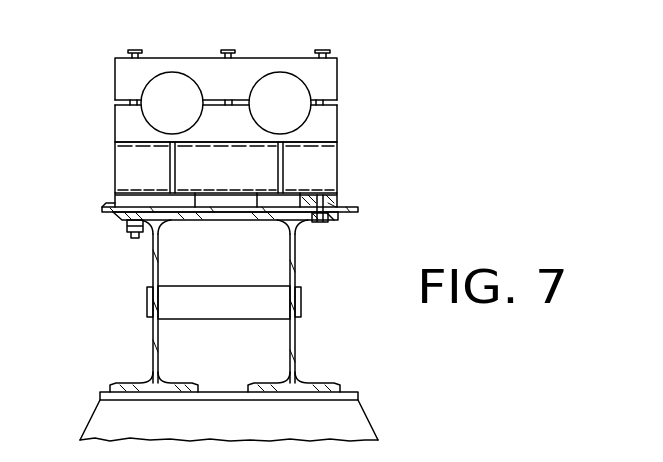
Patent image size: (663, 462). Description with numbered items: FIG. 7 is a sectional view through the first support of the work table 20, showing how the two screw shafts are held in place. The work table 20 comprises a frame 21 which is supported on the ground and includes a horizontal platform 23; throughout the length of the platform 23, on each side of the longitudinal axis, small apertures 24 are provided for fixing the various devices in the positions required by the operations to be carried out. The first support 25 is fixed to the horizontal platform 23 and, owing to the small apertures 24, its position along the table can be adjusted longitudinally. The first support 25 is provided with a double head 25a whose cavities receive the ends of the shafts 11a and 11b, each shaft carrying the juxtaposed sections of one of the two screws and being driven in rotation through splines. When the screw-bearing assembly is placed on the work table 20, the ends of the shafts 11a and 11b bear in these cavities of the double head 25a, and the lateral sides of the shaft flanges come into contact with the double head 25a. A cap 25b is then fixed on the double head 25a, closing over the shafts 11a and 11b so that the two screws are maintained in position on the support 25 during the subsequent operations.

The shaft 11a is at (284, 85).
The shaft 11b is at (178, 85).
The work table 20 is at (311, 313).
The frame 21 is at (153, 353).
The horizontal platform 23 is at (105, 209).
The small apertures 24 is at (133, 236).
The first support 25 is at (111, 118).
The double head 25a is at (326, 181).
The cap 25b is at (329, 91).